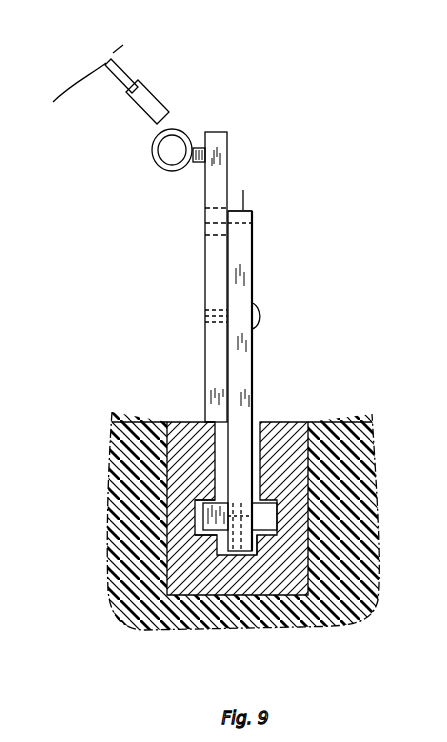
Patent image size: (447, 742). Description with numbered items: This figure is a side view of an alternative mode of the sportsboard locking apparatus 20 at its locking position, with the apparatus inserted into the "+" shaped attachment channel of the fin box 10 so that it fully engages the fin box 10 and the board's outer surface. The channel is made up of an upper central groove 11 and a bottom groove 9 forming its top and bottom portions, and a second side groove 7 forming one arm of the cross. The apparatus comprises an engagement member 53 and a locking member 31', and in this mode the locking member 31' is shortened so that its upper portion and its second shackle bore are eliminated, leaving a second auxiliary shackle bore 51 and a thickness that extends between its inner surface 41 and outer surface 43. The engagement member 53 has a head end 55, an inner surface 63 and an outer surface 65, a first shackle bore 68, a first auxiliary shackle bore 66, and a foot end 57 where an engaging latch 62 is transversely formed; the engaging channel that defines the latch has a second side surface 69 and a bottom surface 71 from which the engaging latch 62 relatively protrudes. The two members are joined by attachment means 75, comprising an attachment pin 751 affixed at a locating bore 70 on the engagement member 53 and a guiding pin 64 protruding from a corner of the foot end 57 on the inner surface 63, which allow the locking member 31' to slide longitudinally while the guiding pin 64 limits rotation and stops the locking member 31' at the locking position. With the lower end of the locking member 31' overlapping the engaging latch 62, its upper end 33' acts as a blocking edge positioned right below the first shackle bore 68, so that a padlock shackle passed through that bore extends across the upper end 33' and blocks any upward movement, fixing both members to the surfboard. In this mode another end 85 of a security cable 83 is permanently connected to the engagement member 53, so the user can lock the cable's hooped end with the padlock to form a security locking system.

The second side groove 7 is at (278, 527).
The bottom groove 9 is at (232, 555).
The fin box 10 is at (340, 598).
The upper central groove 11 is at (262, 467).
The sportsboard locking apparatus 20 is at (186, 57).
The locking member 31' is at (284, 381).
The upper end 33' is at (277, 149).
The inner surface 41 is at (231, 210).
The outer surface 43 is at (255, 383).
The second auxiliary shackle bore 51 is at (253, 223).
The engagement member 53 is at (150, 118).
The head end 55 is at (190, 140).
The foot end 57 is at (212, 540).
The engaging latch 62 is at (203, 518).
The inner surface 63 is at (224, 131).
The guiding pin 64 is at (262, 548).
The outer surface 65 is at (205, 390).
The first auxiliary shackle bore 66 is at (205, 226).
The first shackle bore 68 is at (202, 196).
The second side surface 69 is at (207, 495).
The locating bore 70 is at (205, 318).
The bottom surface 71 is at (213, 455).
The attachment means 75 is at (285, 309).
The attachment pin 751 is at (262, 323).
The security cable 83 is at (86, 82).
The another end 85 is at (152, 165).